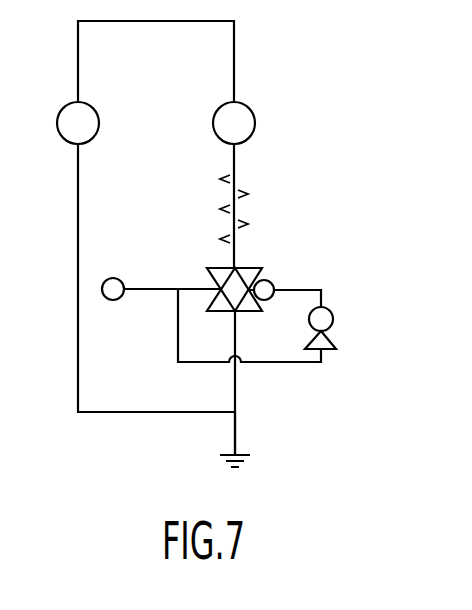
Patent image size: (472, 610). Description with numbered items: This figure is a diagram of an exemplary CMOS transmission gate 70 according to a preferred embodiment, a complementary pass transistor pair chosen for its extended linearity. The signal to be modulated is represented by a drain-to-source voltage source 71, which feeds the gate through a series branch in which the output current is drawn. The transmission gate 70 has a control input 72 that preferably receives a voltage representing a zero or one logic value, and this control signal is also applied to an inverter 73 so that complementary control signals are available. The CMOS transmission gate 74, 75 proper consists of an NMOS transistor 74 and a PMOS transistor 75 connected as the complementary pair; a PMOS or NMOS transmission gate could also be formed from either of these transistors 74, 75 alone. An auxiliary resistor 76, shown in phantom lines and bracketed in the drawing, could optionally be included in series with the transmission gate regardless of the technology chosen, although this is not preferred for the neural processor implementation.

The transmission gate 70 is at (263, 85).
The Vds source 71 is at (63, 102).
The control input 72 is at (121, 300).
The inverter 73 is at (330, 350).
The NMOS transistor 74 is at (213, 265).
The PMOS transistor 75 is at (258, 268).
The auxiliary resistor 76 is at (271, 251).